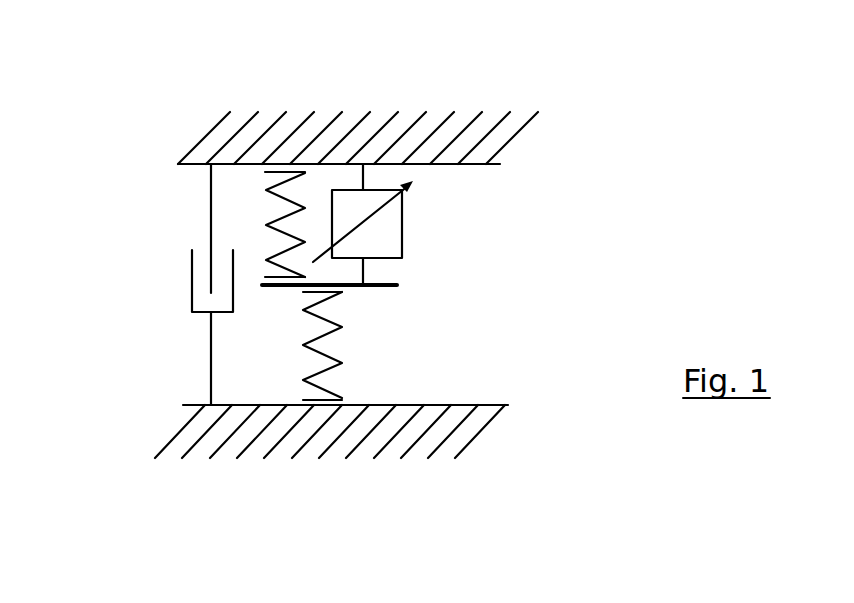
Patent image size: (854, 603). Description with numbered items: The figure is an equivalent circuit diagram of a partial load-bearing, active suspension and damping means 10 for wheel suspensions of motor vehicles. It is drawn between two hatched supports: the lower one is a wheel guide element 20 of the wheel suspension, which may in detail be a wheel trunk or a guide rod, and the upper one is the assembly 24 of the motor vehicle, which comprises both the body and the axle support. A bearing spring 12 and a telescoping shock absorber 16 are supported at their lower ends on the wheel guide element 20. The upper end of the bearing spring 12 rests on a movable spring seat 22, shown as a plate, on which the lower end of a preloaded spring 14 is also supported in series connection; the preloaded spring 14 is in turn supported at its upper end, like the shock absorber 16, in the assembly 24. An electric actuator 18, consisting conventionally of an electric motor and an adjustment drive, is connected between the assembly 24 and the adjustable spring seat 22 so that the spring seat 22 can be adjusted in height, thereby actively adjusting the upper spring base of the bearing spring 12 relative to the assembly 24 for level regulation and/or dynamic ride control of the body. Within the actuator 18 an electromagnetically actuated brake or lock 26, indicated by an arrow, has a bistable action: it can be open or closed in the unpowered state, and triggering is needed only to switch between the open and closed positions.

The active suspension and damping means 10 is at (160, 357).
The bearing spring 12 is at (342, 362).
The preloaded spring 14 is at (272, 210).
The telescoping shock absorber 16 is at (183, 283).
The electric actuator 18 is at (430, 222).
The wheel guide element 20 is at (411, 405).
The movable spring seat 22 is at (352, 287).
The assembly 24 is at (450, 164).
The brake or lock 26 is at (351, 216).